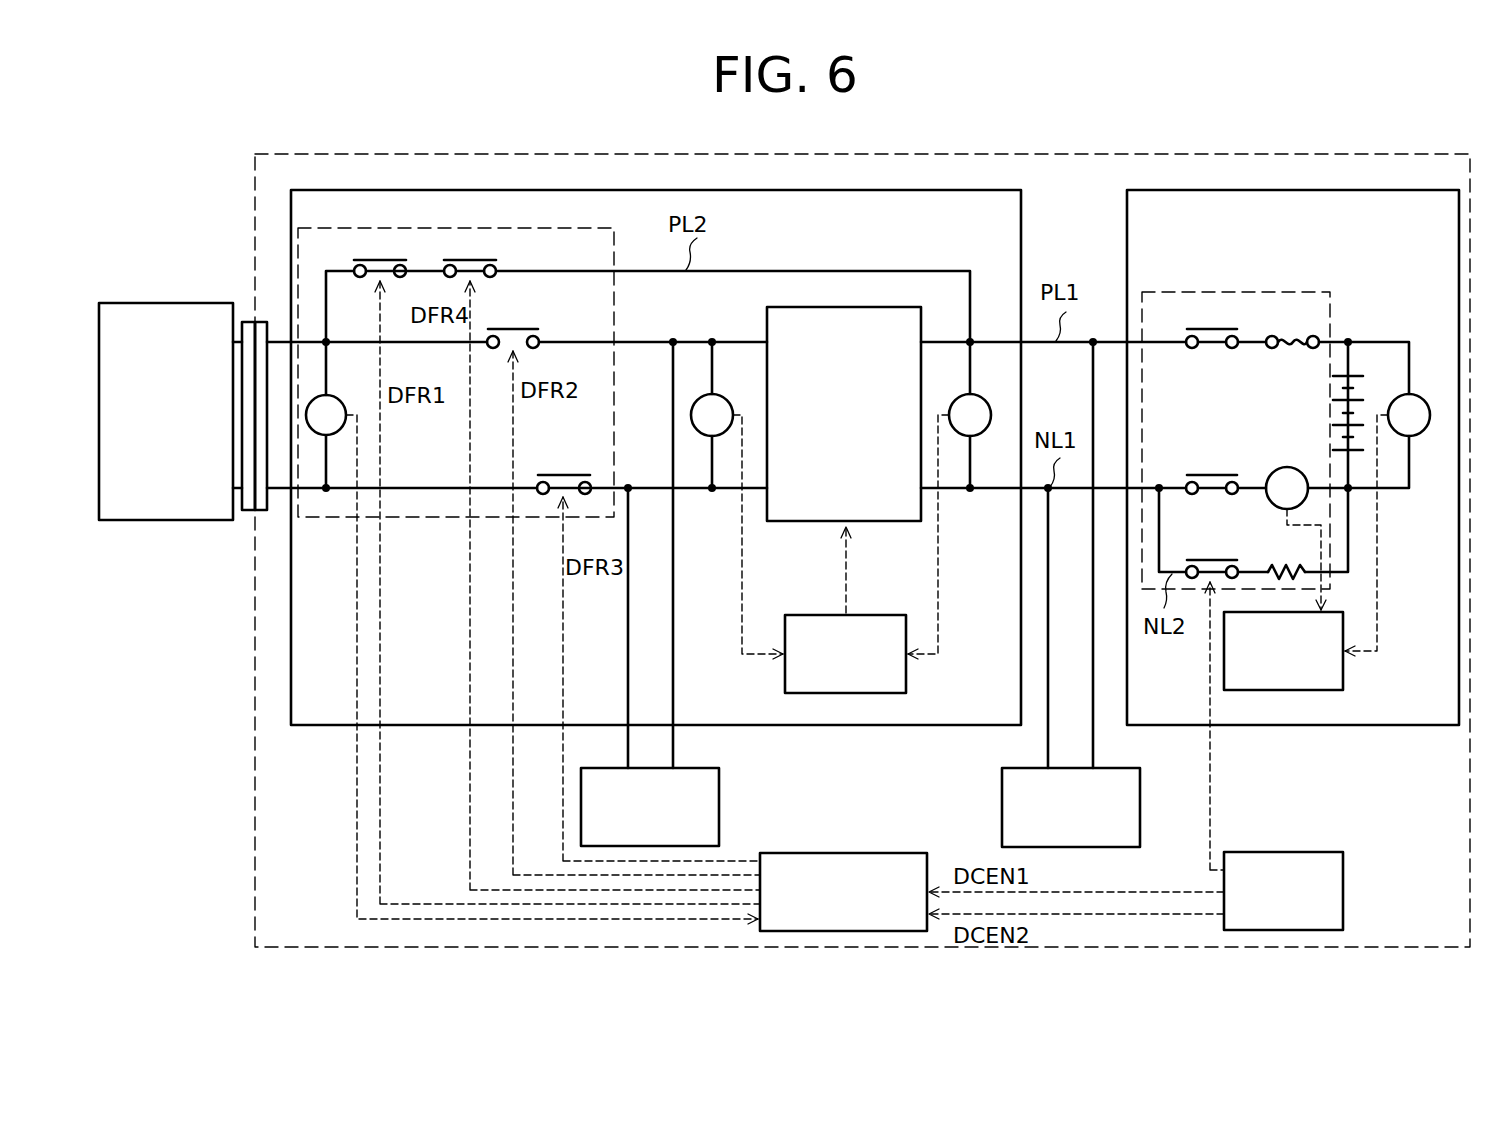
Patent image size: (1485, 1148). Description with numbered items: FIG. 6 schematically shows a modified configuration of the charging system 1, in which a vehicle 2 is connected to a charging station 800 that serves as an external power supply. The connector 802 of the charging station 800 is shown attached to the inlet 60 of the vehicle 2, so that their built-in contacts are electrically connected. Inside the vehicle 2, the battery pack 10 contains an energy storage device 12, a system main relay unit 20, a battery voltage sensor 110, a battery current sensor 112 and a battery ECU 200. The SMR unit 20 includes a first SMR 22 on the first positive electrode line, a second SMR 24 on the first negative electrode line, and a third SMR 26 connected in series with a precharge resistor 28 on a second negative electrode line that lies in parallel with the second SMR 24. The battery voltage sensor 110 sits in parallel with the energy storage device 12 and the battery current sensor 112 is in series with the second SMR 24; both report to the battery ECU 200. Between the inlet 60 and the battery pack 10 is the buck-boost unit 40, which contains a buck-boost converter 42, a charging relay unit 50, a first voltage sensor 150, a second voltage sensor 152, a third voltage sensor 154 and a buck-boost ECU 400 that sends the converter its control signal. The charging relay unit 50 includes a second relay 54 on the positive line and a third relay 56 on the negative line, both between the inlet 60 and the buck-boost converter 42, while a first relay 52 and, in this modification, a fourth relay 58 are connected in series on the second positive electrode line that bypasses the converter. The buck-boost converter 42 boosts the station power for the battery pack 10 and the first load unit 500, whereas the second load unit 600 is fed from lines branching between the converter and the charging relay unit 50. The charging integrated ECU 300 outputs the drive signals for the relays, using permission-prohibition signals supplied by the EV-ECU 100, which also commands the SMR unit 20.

The charging system 1 is at (199, 156).
The vehicle 2 is at (1400, 154).
The battery pack 10 is at (1408, 190).
The energy storage device 12 is at (1362, 364).
The system main relay unit 20 is at (1290, 292).
The first SMR 22 is at (1249, 329).
The second SMR 24 is at (1207, 470).
The third SMR 26 is at (1205, 552).
The precharge resistor 28 is at (1282, 558).
The buck-boost unit 40 is at (975, 190).
The buck-boost converter 42 is at (866, 307).
The charging relay unit 50 is at (588, 228).
The first relay 52 is at (349, 262).
The second relay 54 is at (550, 328).
The third relay 56 is at (560, 468).
The fourth relay 58 is at (508, 261).
The inlet 60 is at (262, 512).
The EV-ECU 100 is at (1300, 852).
The battery voltage sensor 110 is at (1423, 393).
The battery current sensor 112 is at (1287, 466).
The first voltage sensor 150 is at (740, 377).
The second voltage sensor 152 is at (984, 392).
The third voltage sensor 154 is at (343, 394).
The battery ECU 200 is at (1303, 690).
The charging integrated ECU 300 is at (862, 853).
The buck-boost ECU 400 is at (868, 615).
The first load unit 500 is at (1115, 768).
The second load unit 600 is at (692, 768).
The charging station 800 is at (176, 303).
The connector 802 is at (247, 512).